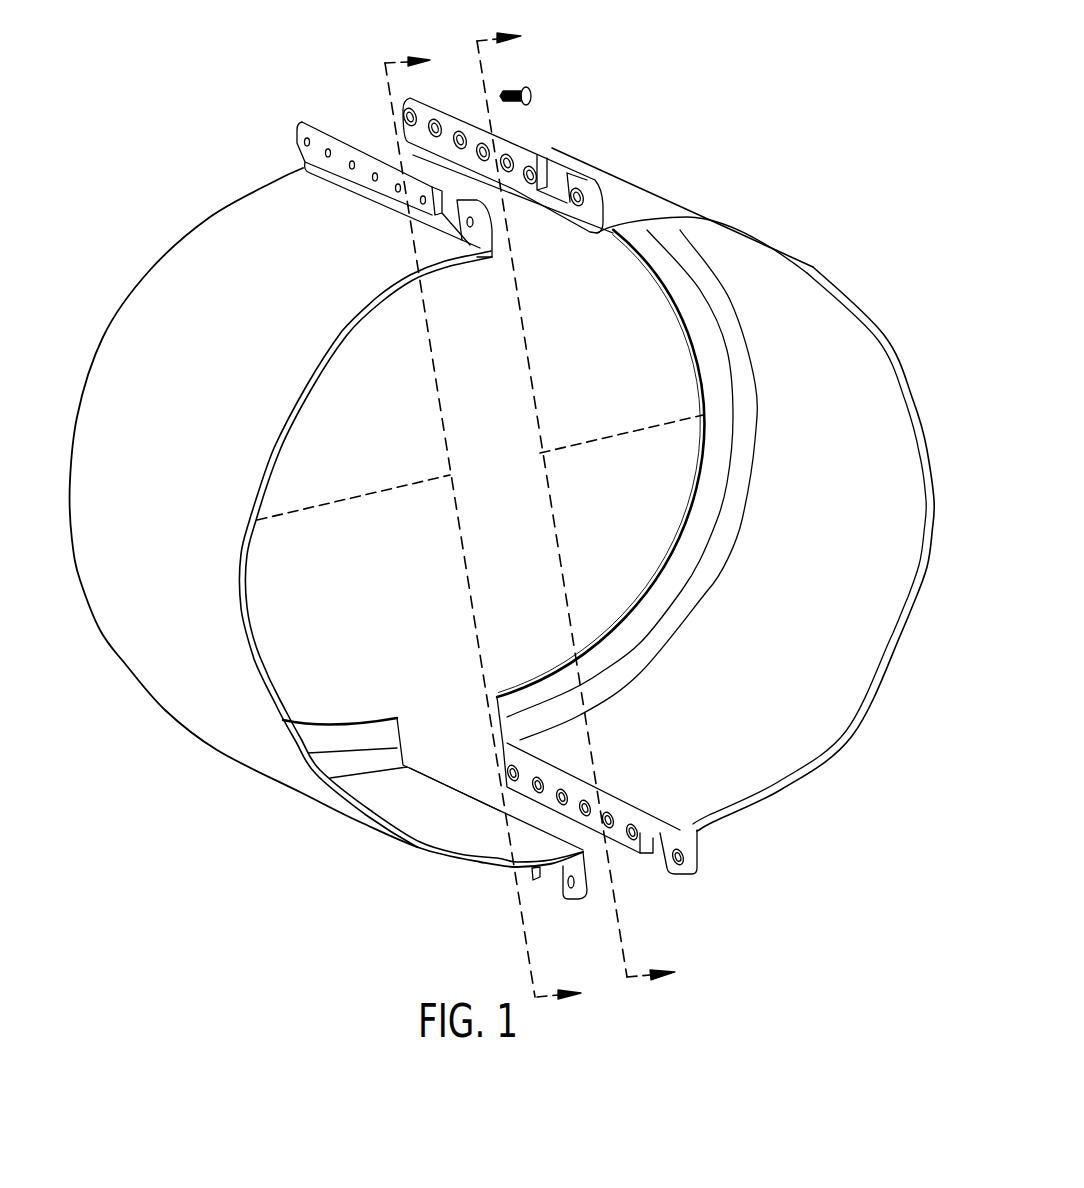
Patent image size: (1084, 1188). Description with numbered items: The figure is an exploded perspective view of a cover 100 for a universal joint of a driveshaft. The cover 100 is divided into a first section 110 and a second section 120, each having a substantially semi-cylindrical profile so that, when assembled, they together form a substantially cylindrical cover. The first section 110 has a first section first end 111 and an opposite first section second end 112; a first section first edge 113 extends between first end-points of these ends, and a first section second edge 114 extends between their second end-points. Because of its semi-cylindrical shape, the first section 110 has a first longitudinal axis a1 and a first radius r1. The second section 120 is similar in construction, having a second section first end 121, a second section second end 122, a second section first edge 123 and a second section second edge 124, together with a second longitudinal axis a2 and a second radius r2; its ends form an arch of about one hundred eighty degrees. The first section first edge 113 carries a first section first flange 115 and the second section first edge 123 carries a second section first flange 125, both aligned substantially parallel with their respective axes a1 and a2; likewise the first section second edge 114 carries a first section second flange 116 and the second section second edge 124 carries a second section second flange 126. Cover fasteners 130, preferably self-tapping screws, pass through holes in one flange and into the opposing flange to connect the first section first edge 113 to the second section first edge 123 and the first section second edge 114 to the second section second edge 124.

The cover 100 is at (683, 83).
The first section 110 is at (106, 388).
The first section first end 111 is at (160, 253).
The first section second end 112 is at (270, 472).
The first section first edge 113 is at (345, 190).
The first section second edge 114 is at (507, 817).
The first section first flange 115 is at (343, 147).
The first section second flange 116 is at (570, 890).
The second section 120 is at (873, 423).
The second section first end 121 is at (687, 517).
The second section second end 122 is at (873, 697).
The second section first edge 123 is at (555, 220).
The second section second edge 124 is at (620, 793).
The second section first flange 125 is at (533, 167).
The second section second flange 126 is at (662, 837).
The cover fasteners 130 is at (525, 85).
The first longitudinal axis a1 is at (442, 413).
The second longitudinal axis a2 is at (551, 507).
The first radius r1 is at (337, 503).
The second radius r2 is at (663, 420).